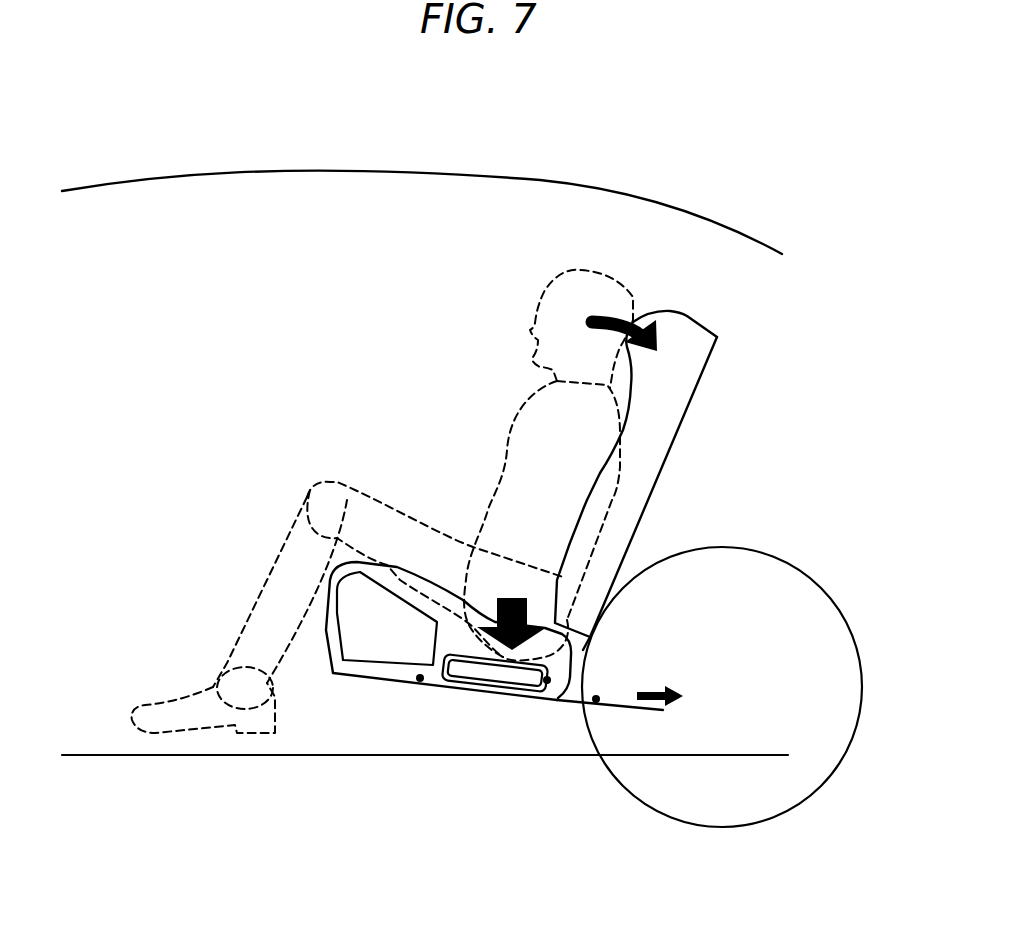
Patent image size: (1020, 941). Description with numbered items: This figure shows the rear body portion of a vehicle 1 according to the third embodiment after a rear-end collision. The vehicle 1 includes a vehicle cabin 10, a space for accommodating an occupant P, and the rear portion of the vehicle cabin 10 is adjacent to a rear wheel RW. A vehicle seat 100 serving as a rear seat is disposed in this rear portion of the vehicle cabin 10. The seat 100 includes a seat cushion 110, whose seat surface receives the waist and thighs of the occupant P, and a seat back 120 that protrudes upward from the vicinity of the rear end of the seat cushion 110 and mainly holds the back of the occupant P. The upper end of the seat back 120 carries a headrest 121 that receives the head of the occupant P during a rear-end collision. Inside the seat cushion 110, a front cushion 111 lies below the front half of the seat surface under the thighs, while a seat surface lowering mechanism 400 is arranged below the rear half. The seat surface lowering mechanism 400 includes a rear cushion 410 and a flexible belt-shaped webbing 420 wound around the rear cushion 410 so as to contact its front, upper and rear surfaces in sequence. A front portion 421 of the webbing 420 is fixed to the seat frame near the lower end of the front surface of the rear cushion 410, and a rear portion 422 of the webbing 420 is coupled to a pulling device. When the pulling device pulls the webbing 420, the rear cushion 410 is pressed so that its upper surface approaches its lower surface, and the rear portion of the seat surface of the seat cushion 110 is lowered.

The vehicle 1 is at (122, 167).
The vehicle cabin 10 is at (288, 320).
The vehicle seat 100 is at (486, 495).
The seat cushion 110 is at (373, 678).
The front cushion 111 is at (342, 598).
The seat back 120 is at (684, 416).
The headrest 121 is at (687, 316).
The seat surface lowering mechanism 400 is at (517, 706).
The rear cushion 410 is at (488, 678).
The webbing 420 is at (547, 680).
The front portion of the webbing 421 is at (420, 678).
The rear portion of the webbing 422 is at (596, 699).
The occupant P is at (560, 240).
The rear wheel RW is at (755, 820).